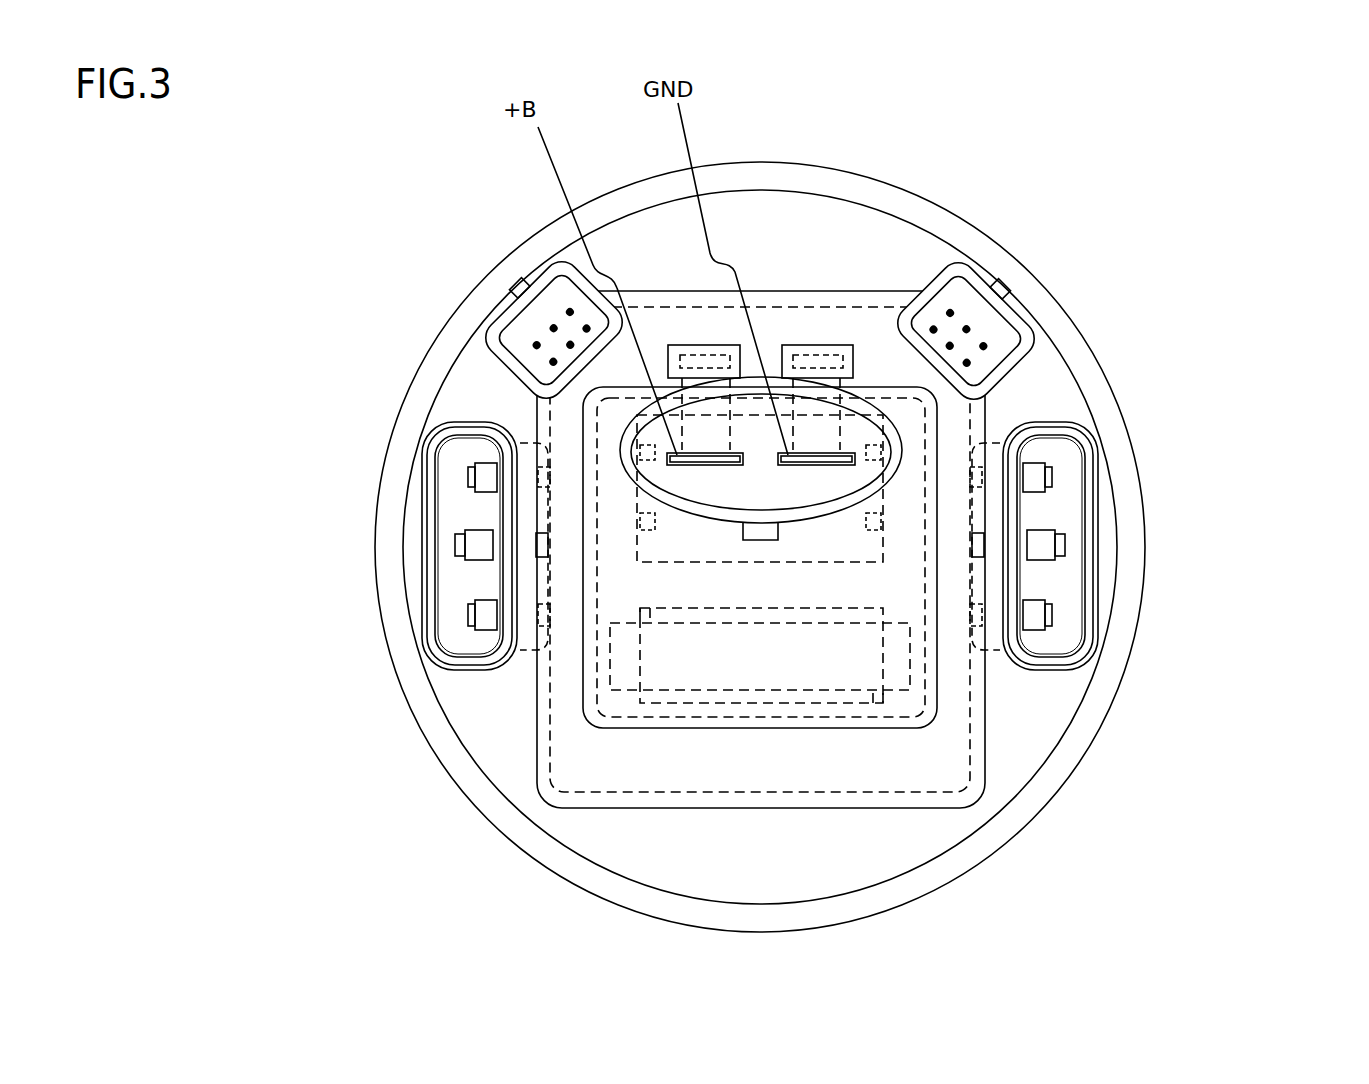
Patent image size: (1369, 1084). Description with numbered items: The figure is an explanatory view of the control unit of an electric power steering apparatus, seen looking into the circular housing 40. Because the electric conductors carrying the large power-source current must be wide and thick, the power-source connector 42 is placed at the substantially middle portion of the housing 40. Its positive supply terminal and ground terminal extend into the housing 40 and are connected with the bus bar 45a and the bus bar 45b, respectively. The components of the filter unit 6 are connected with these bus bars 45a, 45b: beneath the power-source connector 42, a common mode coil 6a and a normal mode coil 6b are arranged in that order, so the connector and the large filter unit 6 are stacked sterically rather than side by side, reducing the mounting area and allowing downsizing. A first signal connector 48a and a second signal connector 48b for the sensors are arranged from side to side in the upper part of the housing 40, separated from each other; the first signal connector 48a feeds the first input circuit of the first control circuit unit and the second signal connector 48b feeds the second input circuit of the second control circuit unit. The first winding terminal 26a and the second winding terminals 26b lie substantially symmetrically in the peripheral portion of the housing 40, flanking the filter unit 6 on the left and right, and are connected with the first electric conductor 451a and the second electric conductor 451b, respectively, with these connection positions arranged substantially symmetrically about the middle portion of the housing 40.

The housing 40 is at (428, 353).
The filter unit 6 is at (890, 808).
The common mode coil 6a is at (862, 415).
The normal mode coil 6b is at (910, 673).
The power-source connector 42 is at (903, 445).
The bus bar 45a is at (703, 350).
The bus bar 45b is at (833, 350).
The first signal connector 48a is at (530, 278).
The second signal connector 48b is at (1012, 308).
The first winding terminal 26a is at (468, 617).
The second winding terminals 26b is at (1053, 617).
The first electric conductor 451a is at (528, 647).
The second electric conductor 451b is at (993, 650).